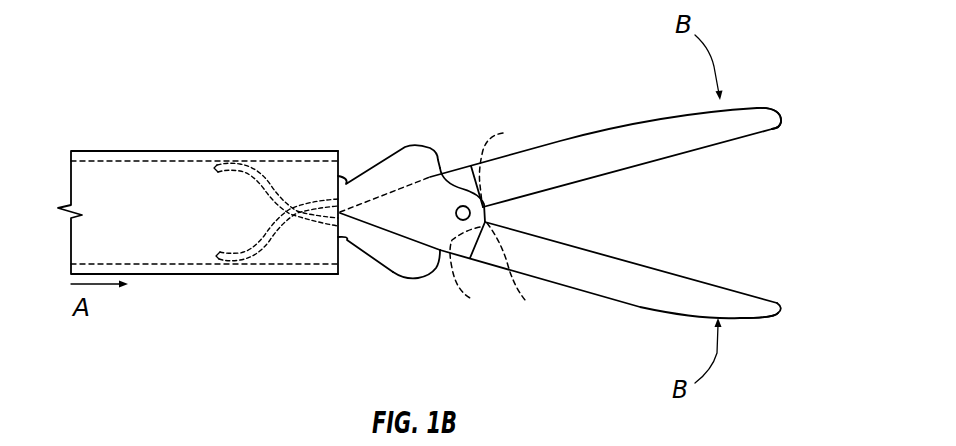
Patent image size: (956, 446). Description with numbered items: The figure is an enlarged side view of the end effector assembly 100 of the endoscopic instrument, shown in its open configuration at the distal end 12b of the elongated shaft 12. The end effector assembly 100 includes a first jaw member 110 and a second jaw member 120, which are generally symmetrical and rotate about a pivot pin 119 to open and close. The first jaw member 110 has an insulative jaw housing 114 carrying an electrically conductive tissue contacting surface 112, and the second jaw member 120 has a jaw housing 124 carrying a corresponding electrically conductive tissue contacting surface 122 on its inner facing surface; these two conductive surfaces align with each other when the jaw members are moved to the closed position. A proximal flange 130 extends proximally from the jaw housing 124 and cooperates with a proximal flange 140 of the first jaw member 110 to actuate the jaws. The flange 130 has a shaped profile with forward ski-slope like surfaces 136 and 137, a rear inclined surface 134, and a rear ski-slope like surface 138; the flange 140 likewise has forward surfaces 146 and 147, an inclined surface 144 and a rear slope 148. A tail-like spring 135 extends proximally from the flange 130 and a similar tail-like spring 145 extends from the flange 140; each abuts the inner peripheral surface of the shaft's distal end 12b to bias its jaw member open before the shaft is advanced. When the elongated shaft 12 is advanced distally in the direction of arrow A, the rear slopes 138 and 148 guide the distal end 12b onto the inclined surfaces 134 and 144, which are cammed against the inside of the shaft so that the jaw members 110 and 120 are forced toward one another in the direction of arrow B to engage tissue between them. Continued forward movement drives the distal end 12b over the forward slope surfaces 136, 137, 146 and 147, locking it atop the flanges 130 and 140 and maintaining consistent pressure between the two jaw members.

The end effector assembly 100 is at (347, 64).
The elongated shaft 12 is at (95, 150).
The distal end of the elongated shaft 12b is at (296, 150).
The first jaw member 110 is at (608, 114).
The electrically conductive tissue contacting surface 112 is at (676, 157).
The insulative jaw housing 114 is at (718, 120).
The second jaw member 120 is at (610, 322).
The electrically conductive tissue contacting surface 122 is at (676, 274).
The jaw housing 124 is at (718, 310).
The proximal flange 130 is at (431, 136).
The rear inclined surface 134 is at (388, 108).
The forward ski-slope like surface 136 is at (440, 162).
The forward ski-slope like surface 137 is at (512, 161).
The pivot pin 119 is at (470, 213).
The rear ski-slope like surface 138 is at (337, 187).
The proximal flange 140 is at (383, 282).
The inclined surface 144 is at (393, 272).
The tail-like spring 145 is at (217, 168).
The tail-like spring 135 is at (220, 257).
The forward surface 146 is at (480, 271).
The forward surface 147 is at (527, 270).
The rear slope 148 is at (346, 236).